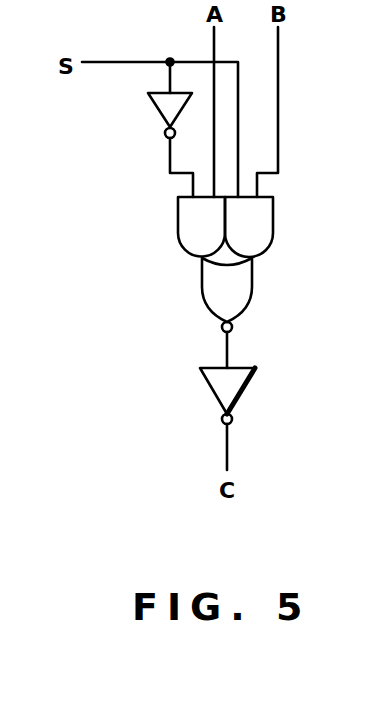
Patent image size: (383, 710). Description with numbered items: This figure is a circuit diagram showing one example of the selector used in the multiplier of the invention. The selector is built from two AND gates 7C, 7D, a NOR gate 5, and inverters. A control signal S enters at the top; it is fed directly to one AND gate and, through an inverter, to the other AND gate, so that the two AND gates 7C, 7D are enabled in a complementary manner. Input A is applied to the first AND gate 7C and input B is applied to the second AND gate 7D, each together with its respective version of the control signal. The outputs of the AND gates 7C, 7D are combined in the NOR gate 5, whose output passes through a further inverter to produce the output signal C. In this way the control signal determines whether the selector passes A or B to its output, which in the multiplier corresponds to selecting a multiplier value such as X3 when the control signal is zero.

The AND gate 7C is at (178, 235).
The AND gate 7D is at (273, 222).
The NOR gate 5 is at (253, 288).